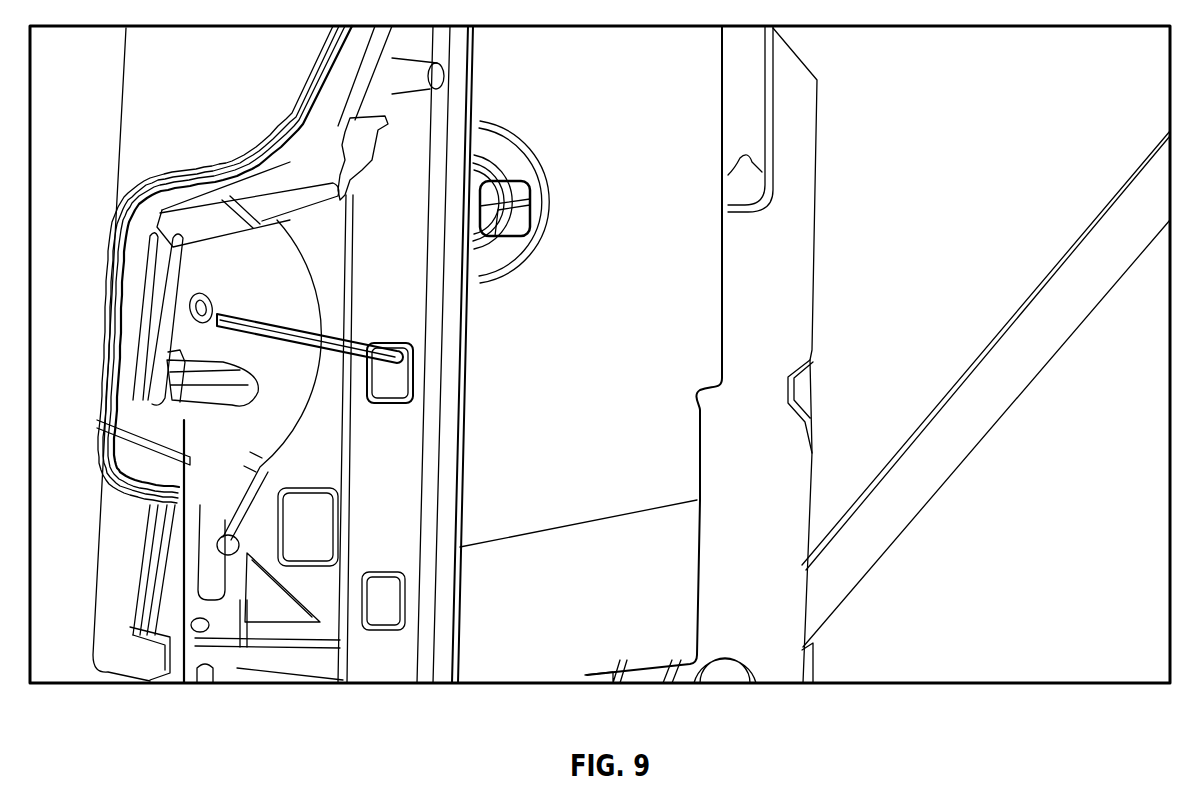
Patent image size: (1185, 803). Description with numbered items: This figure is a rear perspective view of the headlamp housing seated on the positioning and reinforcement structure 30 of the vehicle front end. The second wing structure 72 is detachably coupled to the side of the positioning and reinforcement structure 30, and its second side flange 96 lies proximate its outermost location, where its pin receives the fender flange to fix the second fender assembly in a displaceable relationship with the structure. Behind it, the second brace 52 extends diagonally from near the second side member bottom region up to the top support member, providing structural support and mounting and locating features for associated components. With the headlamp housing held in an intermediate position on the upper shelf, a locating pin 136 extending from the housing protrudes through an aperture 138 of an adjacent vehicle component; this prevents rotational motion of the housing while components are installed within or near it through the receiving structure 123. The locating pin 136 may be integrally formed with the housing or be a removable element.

The positioning and reinforcement structure 30 is at (1042, 250).
The second brace 52 is at (998, 335).
The second wing structure 72 is at (762, 671).
The second side flange 96 is at (372, 665).
The receiving structure 123 is at (530, 206).
The locating pin 136 is at (358, 337).
The aperture 138 is at (187, 315).